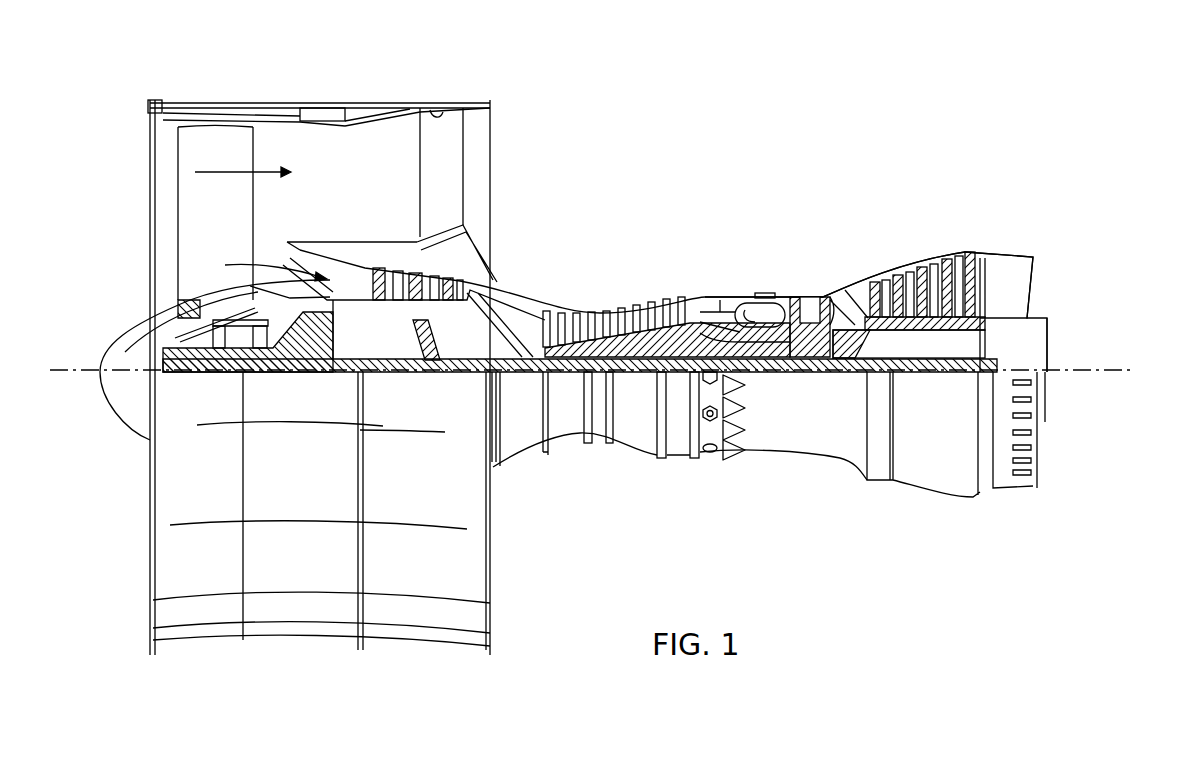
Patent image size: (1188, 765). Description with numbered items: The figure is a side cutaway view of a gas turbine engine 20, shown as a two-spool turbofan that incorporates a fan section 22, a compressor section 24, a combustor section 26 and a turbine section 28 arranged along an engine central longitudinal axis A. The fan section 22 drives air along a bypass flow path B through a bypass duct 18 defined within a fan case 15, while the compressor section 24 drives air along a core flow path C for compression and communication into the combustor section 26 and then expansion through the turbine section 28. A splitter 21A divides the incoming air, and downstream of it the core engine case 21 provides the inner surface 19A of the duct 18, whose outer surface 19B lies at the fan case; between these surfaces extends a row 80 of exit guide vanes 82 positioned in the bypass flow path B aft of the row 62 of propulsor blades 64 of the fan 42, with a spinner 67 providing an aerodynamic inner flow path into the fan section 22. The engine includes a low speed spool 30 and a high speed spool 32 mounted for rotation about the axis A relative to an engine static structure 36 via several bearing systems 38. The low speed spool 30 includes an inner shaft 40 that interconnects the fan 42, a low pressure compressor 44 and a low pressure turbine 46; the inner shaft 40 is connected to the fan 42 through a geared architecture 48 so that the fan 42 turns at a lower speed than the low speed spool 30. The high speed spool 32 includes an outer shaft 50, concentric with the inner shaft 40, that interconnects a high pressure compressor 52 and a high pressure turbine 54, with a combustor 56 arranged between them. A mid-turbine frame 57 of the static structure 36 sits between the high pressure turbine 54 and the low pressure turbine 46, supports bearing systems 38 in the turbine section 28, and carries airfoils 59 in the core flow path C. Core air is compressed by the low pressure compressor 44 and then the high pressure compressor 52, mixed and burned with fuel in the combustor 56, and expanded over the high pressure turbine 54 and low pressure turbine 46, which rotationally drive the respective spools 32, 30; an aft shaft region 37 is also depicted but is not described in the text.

The fan case 15 is at (318, 110).
The bypass duct 18 is at (360, 113).
The inner surface of the duct 19A is at (450, 228).
The outer surface of the duct 19B is at (448, 113).
The gas turbine engine 20 is at (752, 151).
The core engine case 21 is at (365, 238).
The splitter 21A is at (298, 248).
The fan section 22 is at (248, 97).
The compressor section 24 is at (540, 284).
The combustor section 26 is at (746, 274).
The turbine section 28 is at (886, 235).
The low speed spool 30 is at (636, 373).
The high speed spool 32 is at (688, 330).
The engine static structure 36 is at (674, 451).
The aft shaft / nozzle 37 is at (830, 463).
The bearing systems 38 is at (450, 360).
The inner shaft 40 is at (513, 375).
The fan 42 is at (228, 224).
The low pressure compressor 44 is at (455, 250).
The low pressure turbine 46 is at (928, 255).
The geared architecture 48 is at (326, 360).
The outer shaft 50 is at (745, 375).
The high pressure compressor 52 is at (608, 312).
The high pressure turbine 54 is at (808, 290).
The combustor 56 is at (744, 318).
The mid-turbine frame 57 is at (843, 281).
The airfoils 59 is at (862, 336).
The row of propulsor blades 62 is at (257, 163).
The propulsor blades 64 is at (243, 224).
The spinner 67 is at (115, 332).
The row of exit guide vanes 80 is at (468, 146).
The exit guide vanes 82 is at (456, 187).
The engine central longitudinal axis A is at (1125, 370).
The bypass flow path B is at (228, 172).
The core flow path C is at (266, 264).